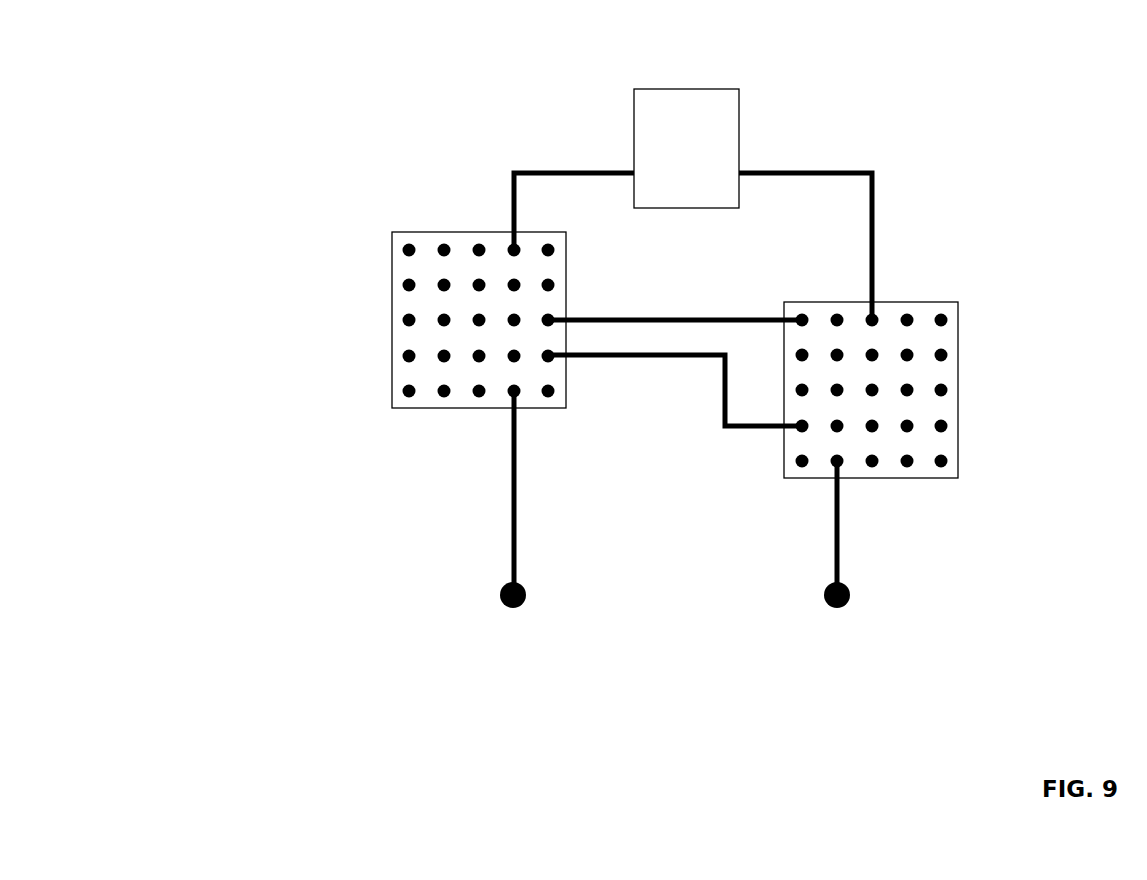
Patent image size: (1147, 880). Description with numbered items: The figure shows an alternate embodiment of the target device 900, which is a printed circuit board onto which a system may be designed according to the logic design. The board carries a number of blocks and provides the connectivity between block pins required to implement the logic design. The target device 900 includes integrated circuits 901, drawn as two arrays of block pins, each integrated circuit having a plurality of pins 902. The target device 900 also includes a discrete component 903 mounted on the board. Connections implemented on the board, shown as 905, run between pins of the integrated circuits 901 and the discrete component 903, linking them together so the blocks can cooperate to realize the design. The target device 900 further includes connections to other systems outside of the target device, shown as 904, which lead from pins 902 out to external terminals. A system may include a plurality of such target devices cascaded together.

The target device 900 is at (206, 90).
The integrated circuits 901 is at (390, 373).
The pins 902 is at (436, 284).
The discrete components 903 is at (632, 125).
The connections to other systems 904 is at (499, 595).
The connections implemented on the board 905 is at (866, 267).